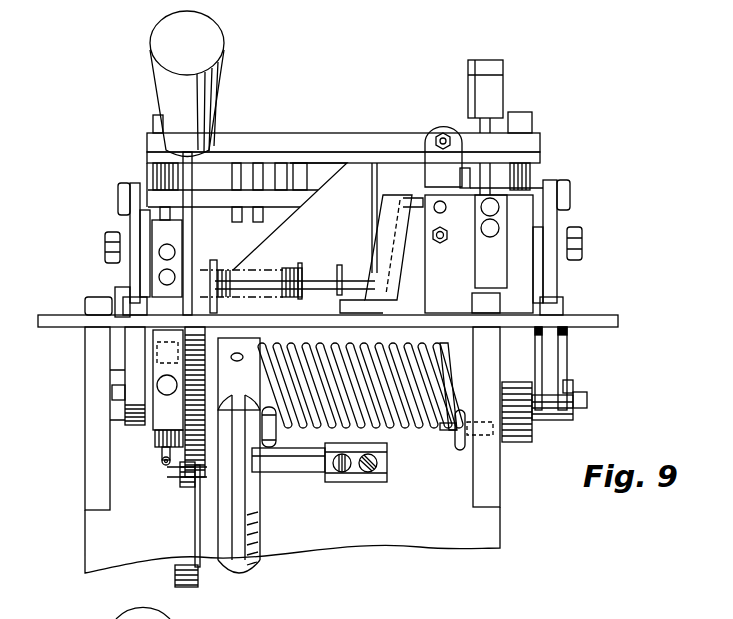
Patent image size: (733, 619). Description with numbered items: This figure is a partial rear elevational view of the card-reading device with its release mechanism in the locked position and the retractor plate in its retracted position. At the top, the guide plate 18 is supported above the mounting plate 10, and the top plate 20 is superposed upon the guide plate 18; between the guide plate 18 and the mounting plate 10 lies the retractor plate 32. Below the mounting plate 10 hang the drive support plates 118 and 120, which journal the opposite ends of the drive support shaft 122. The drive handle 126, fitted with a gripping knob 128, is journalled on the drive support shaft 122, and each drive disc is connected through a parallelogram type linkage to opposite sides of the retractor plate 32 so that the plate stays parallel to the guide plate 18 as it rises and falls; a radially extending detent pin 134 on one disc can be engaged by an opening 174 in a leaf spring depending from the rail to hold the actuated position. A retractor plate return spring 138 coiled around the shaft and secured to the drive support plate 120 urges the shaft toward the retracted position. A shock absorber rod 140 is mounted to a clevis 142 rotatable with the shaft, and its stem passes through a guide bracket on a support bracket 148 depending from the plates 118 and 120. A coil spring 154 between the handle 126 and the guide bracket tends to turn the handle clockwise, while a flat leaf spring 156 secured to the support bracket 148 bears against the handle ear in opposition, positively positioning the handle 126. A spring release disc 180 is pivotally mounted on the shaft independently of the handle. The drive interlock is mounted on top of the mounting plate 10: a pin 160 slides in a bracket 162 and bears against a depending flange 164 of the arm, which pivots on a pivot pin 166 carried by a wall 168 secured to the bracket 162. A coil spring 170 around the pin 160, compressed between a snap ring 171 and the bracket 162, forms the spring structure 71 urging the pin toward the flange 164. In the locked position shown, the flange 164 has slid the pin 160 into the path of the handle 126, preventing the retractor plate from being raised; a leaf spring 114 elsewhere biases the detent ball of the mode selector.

The mounting plate 10 is at (62, 319).
The guide plate 18 is at (540, 157).
The top plate 20 is at (540, 141).
The retractor plate 32 is at (149, 195).
The spring structure 71 is at (327, 236).
The leaf spring 114 is at (485, 266).
The drive support plate 118 is at (89, 472).
The drive support plate 120 is at (492, 498).
The drive support shaft 122 is at (459, 359).
The drive handle 126 is at (192, 185).
The gripping knob 128 is at (163, 83).
The detent pin 134 is at (162, 461).
The retractor plate return spring 138 is at (425, 426).
The rod 140 is at (258, 534).
The clevis 142 is at (253, 463).
The support bracket 148 is at (390, 540).
The coil spring 154 is at (194, 584).
The flat leaf spring 156 is at (307, 470).
The pin 160 is at (203, 269).
The bracket 162 is at (218, 272).
The depending flange 164 is at (391, 266).
The pivot pin 166 is at (421, 181).
The wall 168 is at (384, 175).
The coil spring 170 is at (284, 276).
The snap ring 171 is at (300, 267).
The opening 174 is at (167, 395).
The spring release disc 180 is at (205, 514).